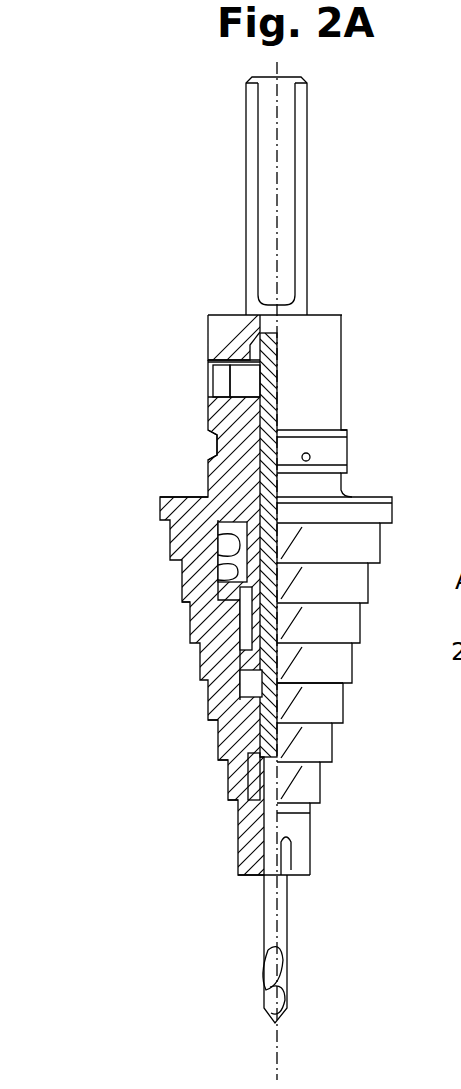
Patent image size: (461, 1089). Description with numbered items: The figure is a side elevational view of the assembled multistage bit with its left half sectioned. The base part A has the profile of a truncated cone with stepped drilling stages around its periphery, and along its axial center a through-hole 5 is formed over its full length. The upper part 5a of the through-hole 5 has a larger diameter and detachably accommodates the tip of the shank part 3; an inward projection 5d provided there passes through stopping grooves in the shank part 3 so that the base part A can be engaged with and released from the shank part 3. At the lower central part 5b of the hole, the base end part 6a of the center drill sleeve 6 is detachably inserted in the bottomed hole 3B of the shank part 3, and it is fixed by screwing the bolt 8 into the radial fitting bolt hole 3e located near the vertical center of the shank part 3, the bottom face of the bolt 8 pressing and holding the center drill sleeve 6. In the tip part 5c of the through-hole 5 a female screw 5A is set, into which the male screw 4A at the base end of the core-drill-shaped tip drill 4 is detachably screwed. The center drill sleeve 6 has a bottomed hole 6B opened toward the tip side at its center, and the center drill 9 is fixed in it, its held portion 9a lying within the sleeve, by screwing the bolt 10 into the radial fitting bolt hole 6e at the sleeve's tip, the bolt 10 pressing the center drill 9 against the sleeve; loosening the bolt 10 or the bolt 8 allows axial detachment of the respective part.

The shank part 3 is at (307, 188).
The fitting bolt hole 3e is at (208, 345).
The bottomed hole 3B is at (278, 398).
The bolt 8 is at (223, 380).
The through-hole 5 is at (205, 607).
The upper part of the through-hole 5a is at (210, 512).
The lower central part of the hole 5b is at (197, 647).
The tip part of the through-hole 5c is at (220, 753).
The projection 5d is at (210, 455).
The female screw 5A is at (237, 778).
The center drill sleeve 6 is at (223, 600).
The base end part of the center drill sleeve 6a is at (250, 338).
The bottomed hole 6B is at (233, 677).
The fitting bolt hole 6e is at (240, 690).
The center drill 9 is at (270, 908).
The drill retaining member 9a is at (247, 712).
The bolt 10 is at (248, 677).
The tip drill 4 is at (237, 860).
The male screw 4A is at (237, 827).
The base part A is at (352, 590).